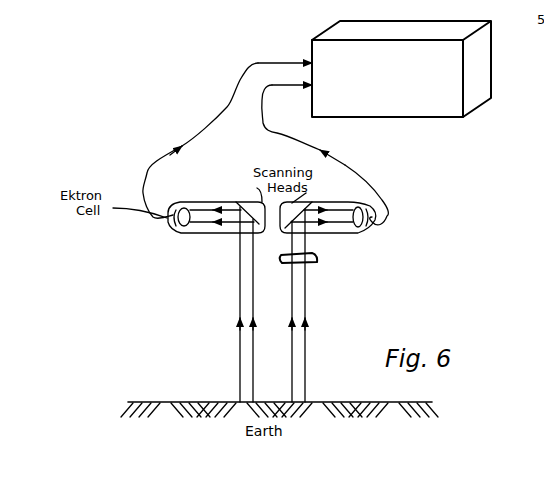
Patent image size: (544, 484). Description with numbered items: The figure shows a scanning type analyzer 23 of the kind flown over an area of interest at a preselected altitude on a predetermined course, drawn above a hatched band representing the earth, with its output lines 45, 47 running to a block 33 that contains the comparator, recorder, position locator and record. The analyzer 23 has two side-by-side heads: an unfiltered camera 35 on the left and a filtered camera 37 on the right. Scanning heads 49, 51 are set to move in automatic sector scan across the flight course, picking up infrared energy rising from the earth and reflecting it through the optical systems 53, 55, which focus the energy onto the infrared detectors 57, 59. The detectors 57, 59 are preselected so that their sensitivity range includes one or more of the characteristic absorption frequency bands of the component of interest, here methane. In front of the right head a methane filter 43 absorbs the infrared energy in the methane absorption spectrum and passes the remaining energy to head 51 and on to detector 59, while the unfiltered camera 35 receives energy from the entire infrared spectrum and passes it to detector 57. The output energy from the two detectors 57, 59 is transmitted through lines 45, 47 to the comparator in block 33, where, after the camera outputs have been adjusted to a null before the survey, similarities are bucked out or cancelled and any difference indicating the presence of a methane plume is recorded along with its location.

The dashed block 33 is at (394, 86).
The output line 45 is at (240, 79).
The output line 47 is at (277, 134).
The infrared camera 35 is at (227, 235).
The infrared camera 37 is at (328, 236).
The scanning head 49 is at (252, 215).
The scanning head 51 is at (300, 210).
The infrared detector 57 is at (170, 222).
The optical system 55 is at (368, 208).
The optical system 53 is at (178, 233).
The infrared detector 59 is at (368, 227).
The methane filter 43 is at (307, 264).
The analyzer system 23 is at (283, 313).